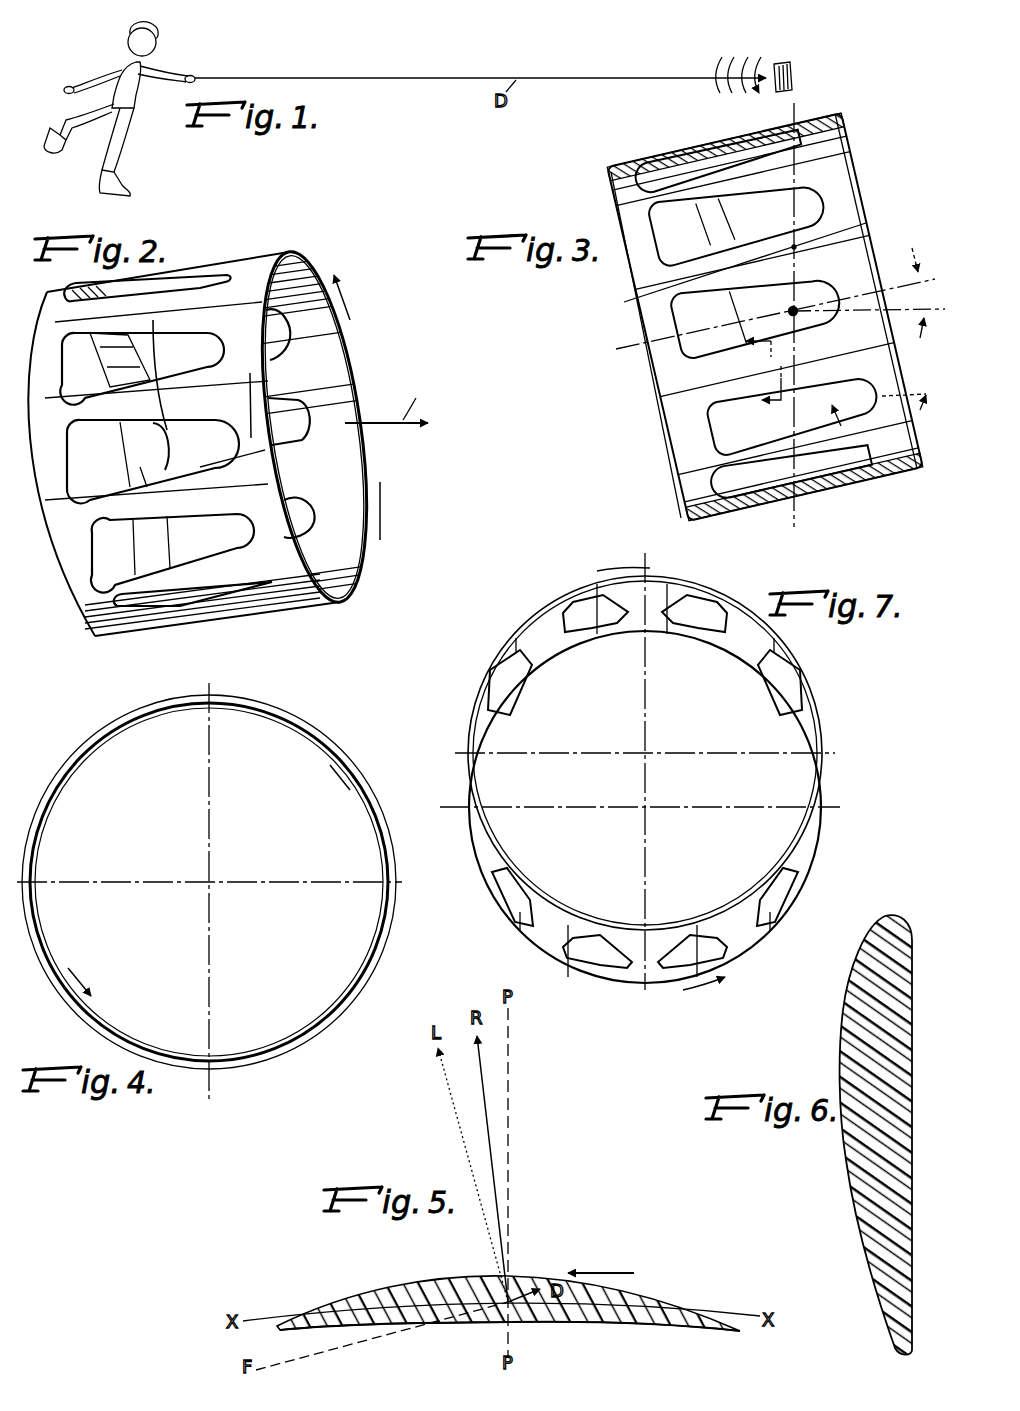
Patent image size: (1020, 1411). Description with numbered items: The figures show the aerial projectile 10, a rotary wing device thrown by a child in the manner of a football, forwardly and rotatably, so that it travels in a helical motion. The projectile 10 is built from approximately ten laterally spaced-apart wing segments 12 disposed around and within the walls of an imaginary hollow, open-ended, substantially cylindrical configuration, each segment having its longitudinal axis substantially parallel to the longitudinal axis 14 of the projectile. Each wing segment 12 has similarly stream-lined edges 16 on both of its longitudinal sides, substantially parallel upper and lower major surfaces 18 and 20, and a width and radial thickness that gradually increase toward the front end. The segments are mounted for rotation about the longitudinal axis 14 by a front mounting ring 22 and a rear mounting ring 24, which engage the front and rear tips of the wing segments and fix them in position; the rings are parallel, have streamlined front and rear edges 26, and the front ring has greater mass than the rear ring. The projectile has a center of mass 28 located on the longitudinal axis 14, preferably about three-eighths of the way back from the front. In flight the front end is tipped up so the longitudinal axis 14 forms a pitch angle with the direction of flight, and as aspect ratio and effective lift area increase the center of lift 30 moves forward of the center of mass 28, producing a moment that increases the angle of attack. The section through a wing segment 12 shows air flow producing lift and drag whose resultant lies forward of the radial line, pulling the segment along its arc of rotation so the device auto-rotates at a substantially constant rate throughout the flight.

In FIG. 1, the aerial projectile 10 is at (786, 53).
In FIG. 2, the wing segment 12 is at (168, 400).
In FIG. 3, the wing segment 12 is at (743, 264).
In FIG. 3, the longitudinal axis 14 is at (621, 347).
In FIG. 4, the longitudinal axis 14 is at (210, 880).
In FIG. 2, the stream-lined edges 16 is at (112, 423).
In FIG. 3, the stream-lined edges 16 is at (708, 258).
In FIG. 5, the stream-lined edges 16 is at (282, 1328).
In FIG. 5, the upper major surface 18 is at (662, 1292).
In FIG. 5, the lower major surface 20 is at (598, 1326).
In FIG. 2, the front mounting ring 22 is at (249, 258).
In FIG. 3, the front mounting ring 22 is at (873, 339).
In FIG. 4, the front mounting ring 22 is at (262, 708).
In FIG. 7, the front mounting ring 22 is at (477, 697).
In FIG. 2, the rear mounting ring 24 is at (47, 333).
In FIG. 3, the rear mounting ring 24 is at (674, 420).
In FIG. 2, the streamlined front and rear edges 26 is at (217, 344).
In FIG. 3, the streamlined front and rear edges 26 is at (858, 177).
In FIG. 6, the streamlined front and rear edges 26 is at (892, 916).
In FIG. 3, the center of mass 28 is at (793, 306).
In FIG. 3, the center of lift 30 is at (866, 223).